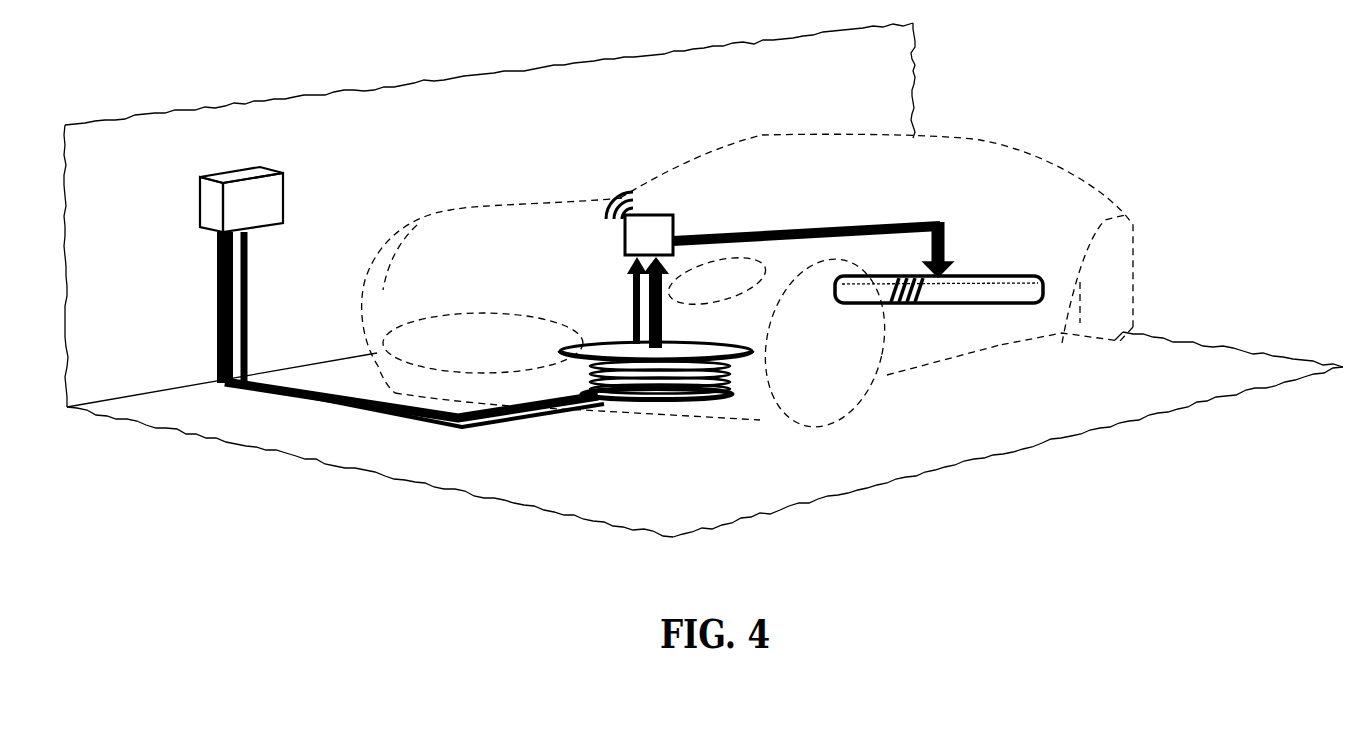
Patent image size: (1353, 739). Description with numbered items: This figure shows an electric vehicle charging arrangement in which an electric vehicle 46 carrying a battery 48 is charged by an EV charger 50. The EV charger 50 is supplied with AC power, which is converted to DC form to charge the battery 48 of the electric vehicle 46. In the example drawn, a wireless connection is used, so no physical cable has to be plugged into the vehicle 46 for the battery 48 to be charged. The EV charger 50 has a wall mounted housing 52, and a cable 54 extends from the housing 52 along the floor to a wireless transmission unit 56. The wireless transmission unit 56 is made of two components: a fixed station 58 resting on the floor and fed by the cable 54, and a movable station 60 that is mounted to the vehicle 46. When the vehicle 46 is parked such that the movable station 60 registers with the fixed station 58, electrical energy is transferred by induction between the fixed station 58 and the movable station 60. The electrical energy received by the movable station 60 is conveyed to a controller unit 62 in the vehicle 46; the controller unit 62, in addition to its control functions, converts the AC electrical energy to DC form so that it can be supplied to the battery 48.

The electric vehicle 46 is at (912, 181).
The battery 48 is at (985, 275).
The EV charger 50 is at (267, 219).
The wall mounted housing 52 is at (219, 199).
The cable 54 is at (375, 411).
The wireless transmission unit 56 is at (740, 379).
The fixed station 58 is at (712, 396).
The movable station 60 is at (708, 343).
The controller unit 62 is at (662, 250).